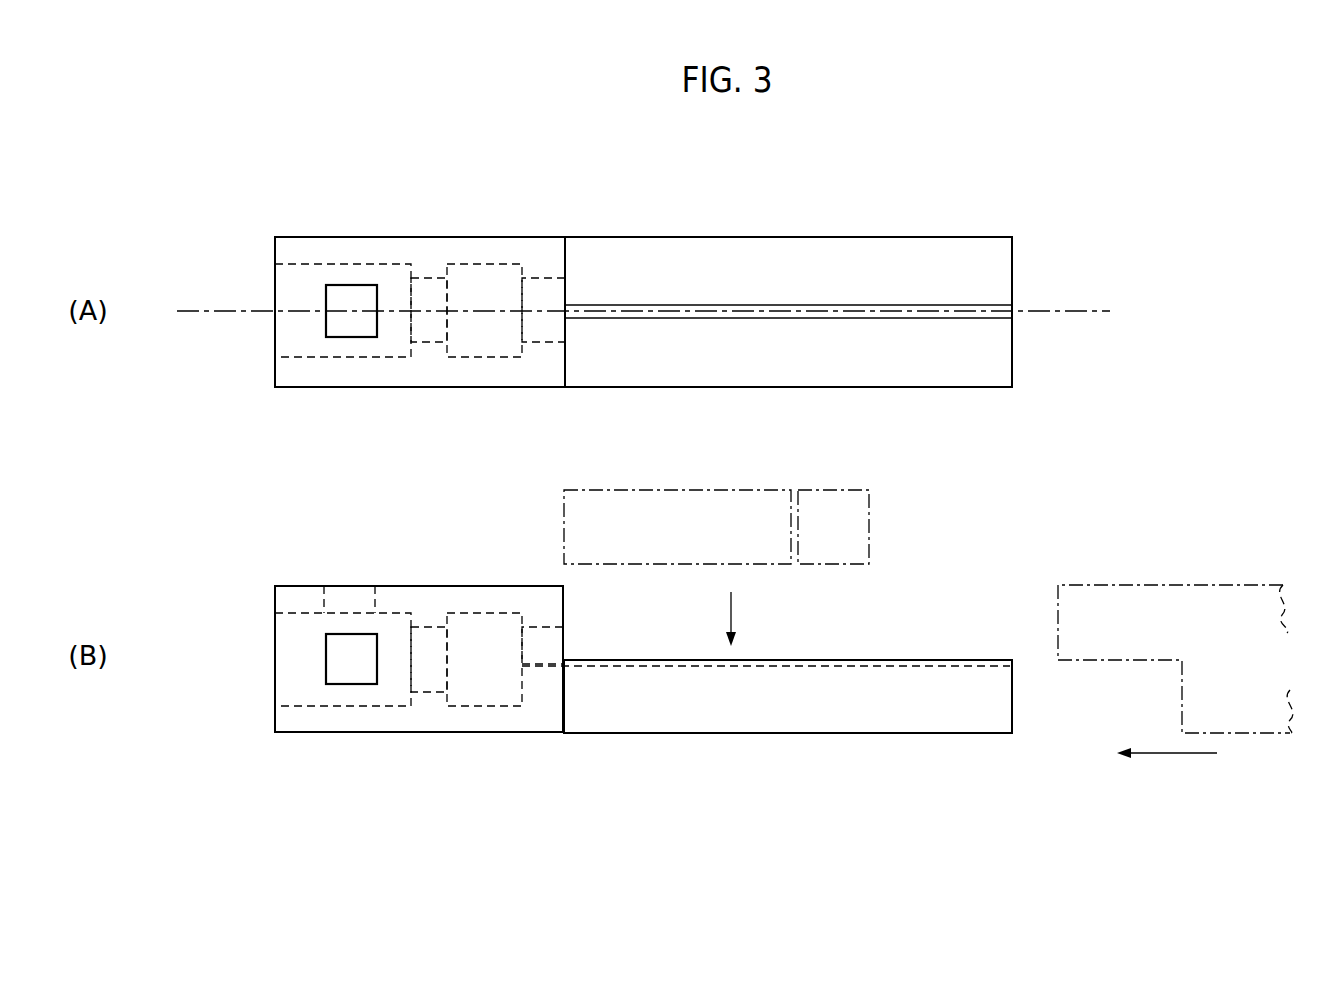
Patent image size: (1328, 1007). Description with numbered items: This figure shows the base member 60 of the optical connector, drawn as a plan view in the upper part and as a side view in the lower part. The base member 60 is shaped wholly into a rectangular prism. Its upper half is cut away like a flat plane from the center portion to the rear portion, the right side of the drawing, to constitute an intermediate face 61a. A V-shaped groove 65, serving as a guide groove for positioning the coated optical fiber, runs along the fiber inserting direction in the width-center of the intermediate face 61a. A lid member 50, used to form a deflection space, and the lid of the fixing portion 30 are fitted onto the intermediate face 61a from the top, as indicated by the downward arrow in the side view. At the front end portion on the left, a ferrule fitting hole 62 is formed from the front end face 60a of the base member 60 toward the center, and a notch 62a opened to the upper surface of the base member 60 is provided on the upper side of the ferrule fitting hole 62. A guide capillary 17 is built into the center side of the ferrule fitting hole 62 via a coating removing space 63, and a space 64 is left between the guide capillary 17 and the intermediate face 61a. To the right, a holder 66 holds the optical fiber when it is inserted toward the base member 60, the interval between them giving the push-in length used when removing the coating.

The base member 60 is at (825, 192).
The front end face 60a is at (276, 250).
The intermediate face 61a is at (625, 243).
The ferrule fitting hole 62 is at (295, 332).
The notch 62a is at (348, 298).
The coating removing space 63 is at (426, 290).
The guide capillary 17 is at (497, 278).
The space 64 is at (550, 340).
The V-shaped groove 65 is at (702, 308).
The lid member 50 is at (750, 490).
The fixing portion 30 is at (865, 528).
The holder 66 is at (1196, 560).